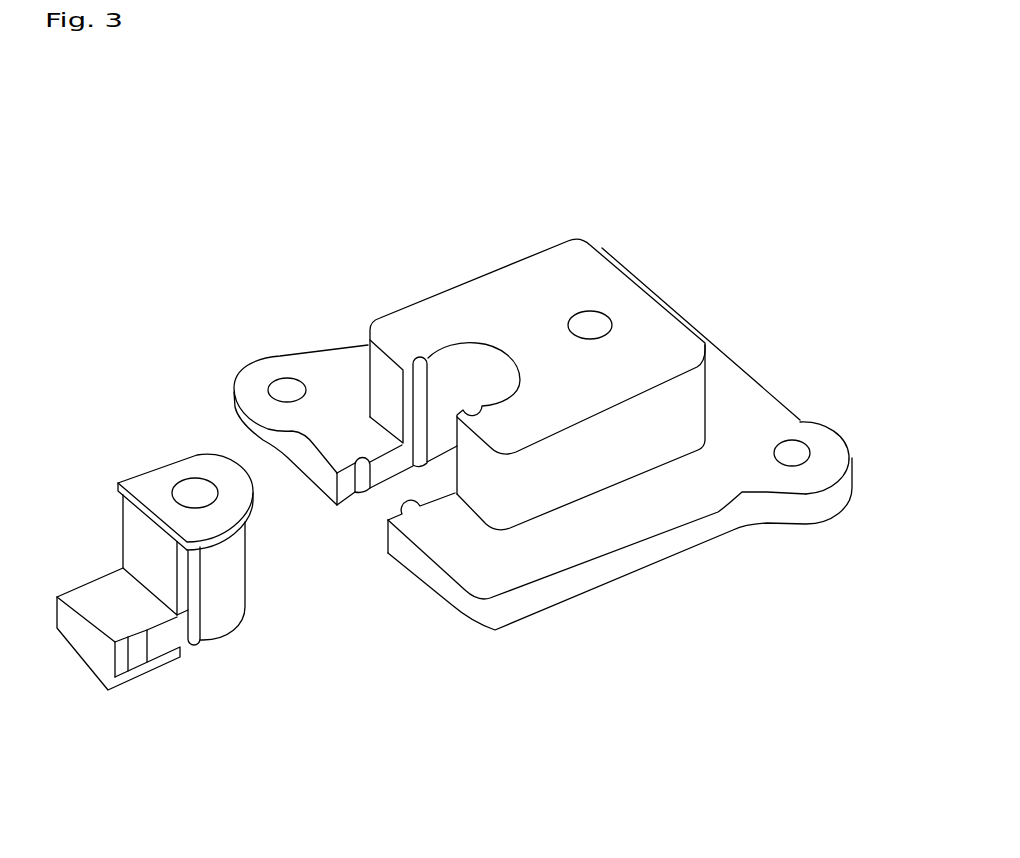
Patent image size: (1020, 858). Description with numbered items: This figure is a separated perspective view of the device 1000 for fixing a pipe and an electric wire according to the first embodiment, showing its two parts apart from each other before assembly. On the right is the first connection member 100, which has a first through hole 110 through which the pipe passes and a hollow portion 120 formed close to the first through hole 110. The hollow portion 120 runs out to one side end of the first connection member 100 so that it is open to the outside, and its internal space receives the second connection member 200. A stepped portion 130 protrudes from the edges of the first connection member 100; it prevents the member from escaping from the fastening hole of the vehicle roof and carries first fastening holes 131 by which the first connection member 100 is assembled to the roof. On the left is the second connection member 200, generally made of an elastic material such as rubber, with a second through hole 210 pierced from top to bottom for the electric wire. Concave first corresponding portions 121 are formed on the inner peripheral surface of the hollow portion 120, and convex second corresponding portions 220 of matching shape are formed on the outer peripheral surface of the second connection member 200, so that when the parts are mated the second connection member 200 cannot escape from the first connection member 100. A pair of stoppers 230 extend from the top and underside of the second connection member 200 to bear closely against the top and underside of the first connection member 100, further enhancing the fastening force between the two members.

The device for fixing a pipe and an electric wire 1000 is at (637, 180).
The first connection member 100 is at (602, 605).
The first through hole 110 is at (590, 325).
The hollow portion 120 is at (464, 371).
The first corresponding portions 121 is at (423, 413).
The stepped portion 130 is at (731, 403).
The first fastening holes 131 is at (792, 452).
The second connection member 200 is at (164, 433).
The second through hole 210 is at (196, 496).
The second corresponding portions 220 is at (137, 660).
The stoppers 230 is at (253, 508).